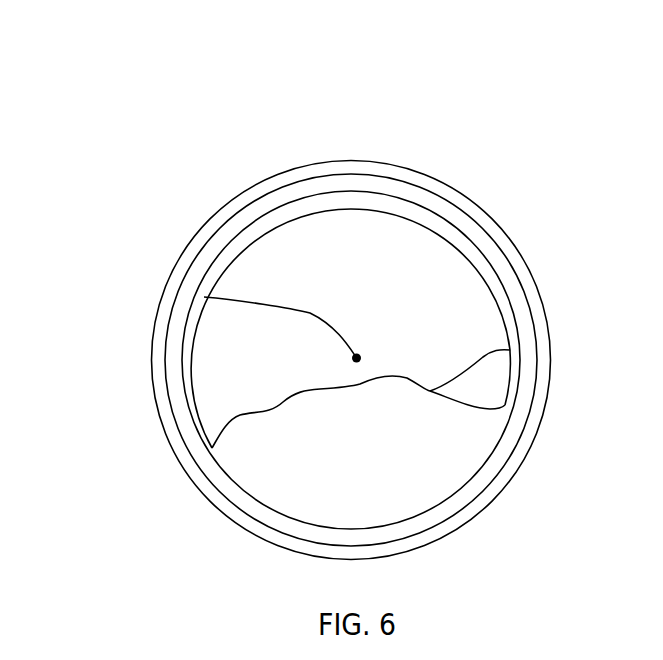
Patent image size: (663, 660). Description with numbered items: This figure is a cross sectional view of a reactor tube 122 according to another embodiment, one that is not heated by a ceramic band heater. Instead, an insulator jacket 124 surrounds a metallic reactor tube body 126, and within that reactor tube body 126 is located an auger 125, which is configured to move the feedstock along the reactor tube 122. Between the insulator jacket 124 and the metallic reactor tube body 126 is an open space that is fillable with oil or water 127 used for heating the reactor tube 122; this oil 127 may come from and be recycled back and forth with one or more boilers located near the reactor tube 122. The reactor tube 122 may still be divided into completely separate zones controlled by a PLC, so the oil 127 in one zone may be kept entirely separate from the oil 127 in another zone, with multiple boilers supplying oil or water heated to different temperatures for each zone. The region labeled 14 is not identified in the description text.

The reactor tube 122 is at (138, 257).
The insulator jacket 124 is at (316, 172).
The auger 125 is at (310, 313).
The metallic reactor tube body 126 is at (483, 258).
The oil or water 127 is at (258, 206).
The fluid 14 is at (282, 475).